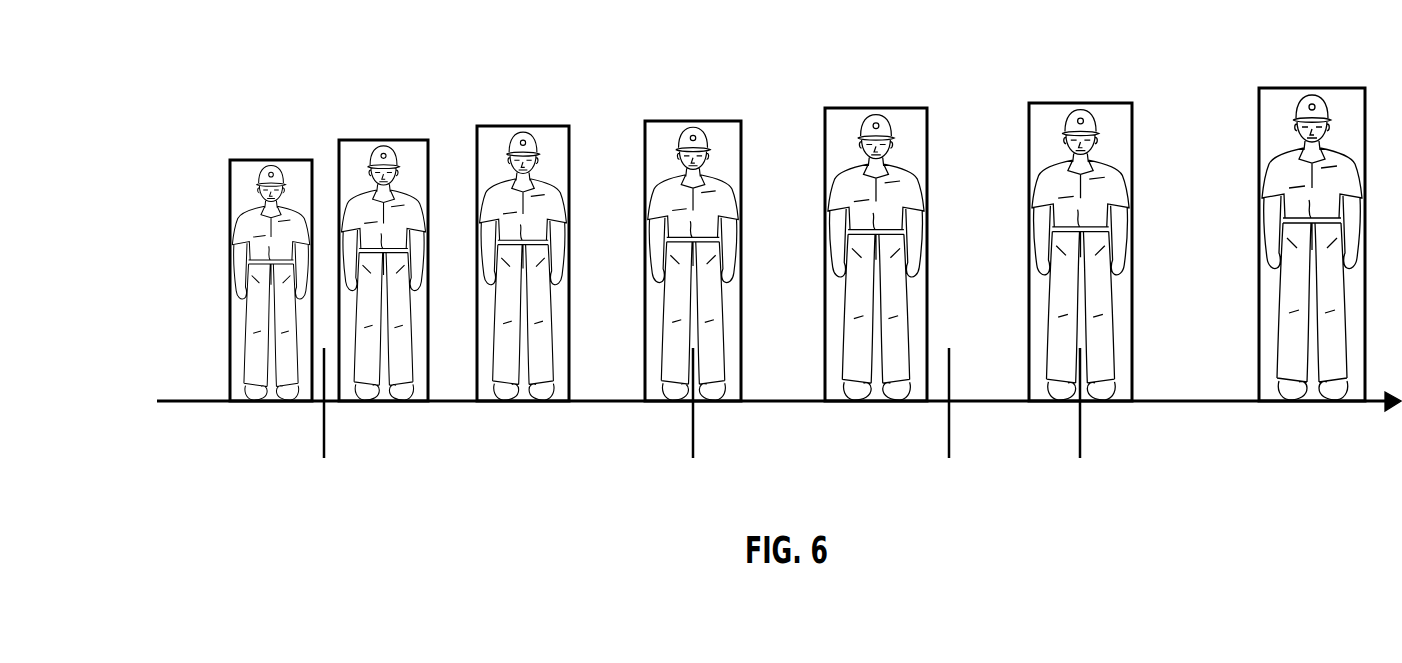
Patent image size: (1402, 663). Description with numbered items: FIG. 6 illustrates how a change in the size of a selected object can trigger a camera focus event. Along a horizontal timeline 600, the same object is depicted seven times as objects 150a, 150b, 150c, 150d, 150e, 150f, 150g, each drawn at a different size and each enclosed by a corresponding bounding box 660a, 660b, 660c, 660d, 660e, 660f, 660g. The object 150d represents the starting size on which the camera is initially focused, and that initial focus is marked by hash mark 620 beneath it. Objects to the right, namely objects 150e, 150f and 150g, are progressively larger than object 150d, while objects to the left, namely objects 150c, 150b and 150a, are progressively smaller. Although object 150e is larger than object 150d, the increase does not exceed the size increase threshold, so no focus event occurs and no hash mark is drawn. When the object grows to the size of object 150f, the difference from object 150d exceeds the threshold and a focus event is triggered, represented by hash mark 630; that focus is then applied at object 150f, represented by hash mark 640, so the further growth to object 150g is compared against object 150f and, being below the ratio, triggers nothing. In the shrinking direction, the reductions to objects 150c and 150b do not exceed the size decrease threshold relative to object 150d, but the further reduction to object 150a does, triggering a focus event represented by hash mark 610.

The timeline 600 is at (175, 404).
The hash mark 610 is at (323, 408).
The hash mark 620 is at (692, 408).
The hash mark 630 is at (948, 408).
The hash mark 640 is at (1079, 408).
The object 150a is at (249, 199).
The object 150b is at (359, 182).
The object 150c is at (498, 170).
The object 150d is at (667, 166).
The object 150e is at (848, 155).
The object 150f is at (1052, 151).
The object 150g is at (1283, 138).
The bounding box 660a is at (290, 160).
The bounding box 660b is at (400, 140).
The bounding box 660c is at (540, 126).
The bounding box 660d is at (693, 121).
The bounding box 660e is at (877, 108).
The bounding box 660f is at (1080, 103).
The bounding box 660g is at (1310, 88).